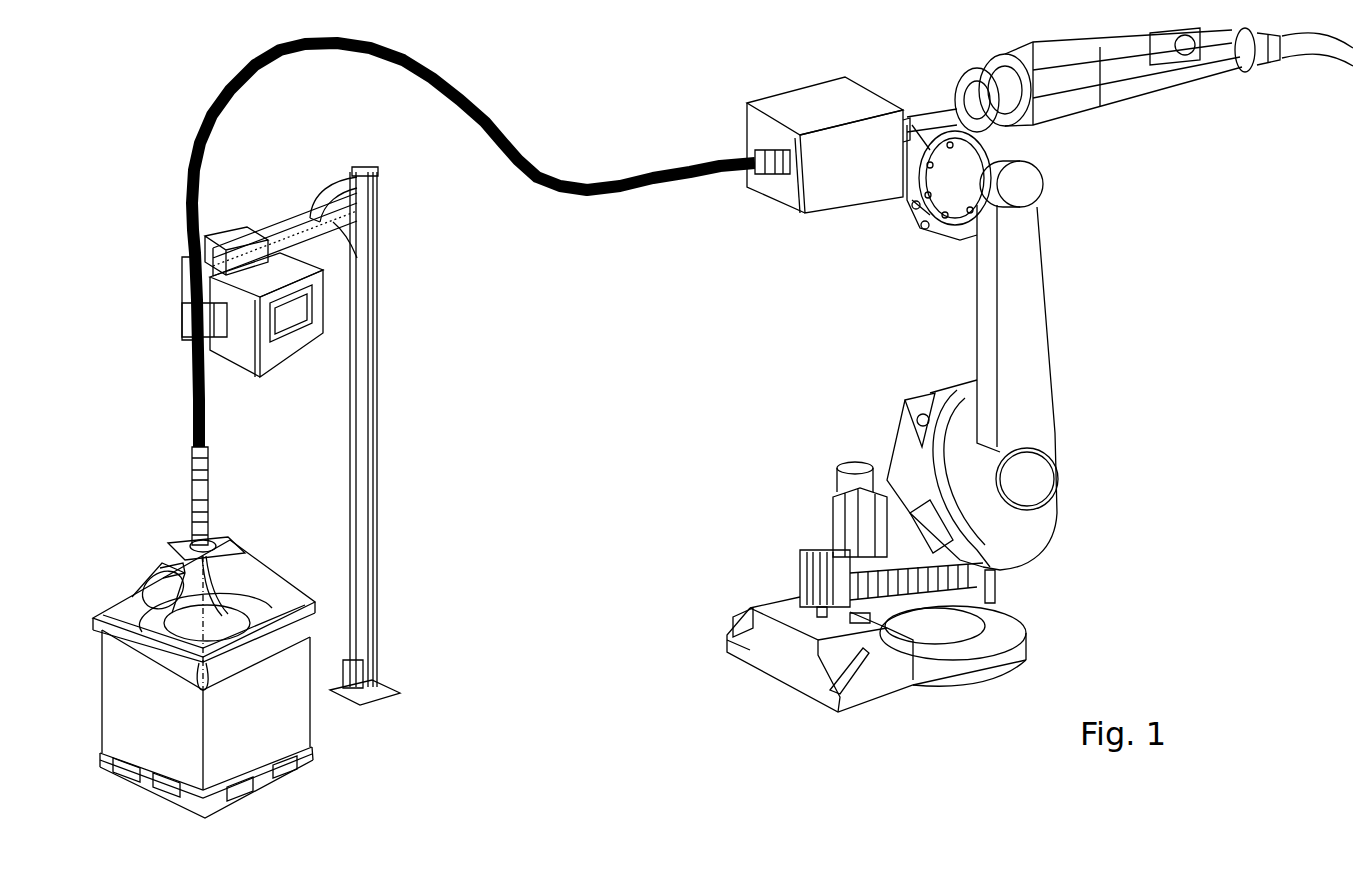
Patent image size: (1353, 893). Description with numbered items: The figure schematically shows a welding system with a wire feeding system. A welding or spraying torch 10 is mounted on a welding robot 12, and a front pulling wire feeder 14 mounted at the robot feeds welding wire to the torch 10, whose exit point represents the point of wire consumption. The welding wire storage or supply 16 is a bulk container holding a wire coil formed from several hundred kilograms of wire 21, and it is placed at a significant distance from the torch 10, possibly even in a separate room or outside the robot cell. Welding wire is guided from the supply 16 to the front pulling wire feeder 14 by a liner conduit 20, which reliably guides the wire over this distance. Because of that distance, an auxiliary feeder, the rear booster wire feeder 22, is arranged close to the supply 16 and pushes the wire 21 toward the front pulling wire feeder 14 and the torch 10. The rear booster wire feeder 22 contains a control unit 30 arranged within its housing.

The welding or spraying torch 10 is at (1152, 108).
The welding robot 12 is at (1072, 371).
The front pulling wire feeder 14 is at (830, 205).
The welding wire storage or supply 16 is at (305, 736).
The liner conduit 20 is at (571, 196).
The wire 21 is at (233, 618).
The rear booster wire feeder 22 is at (267, 212).
The control unit 30 is at (293, 350).